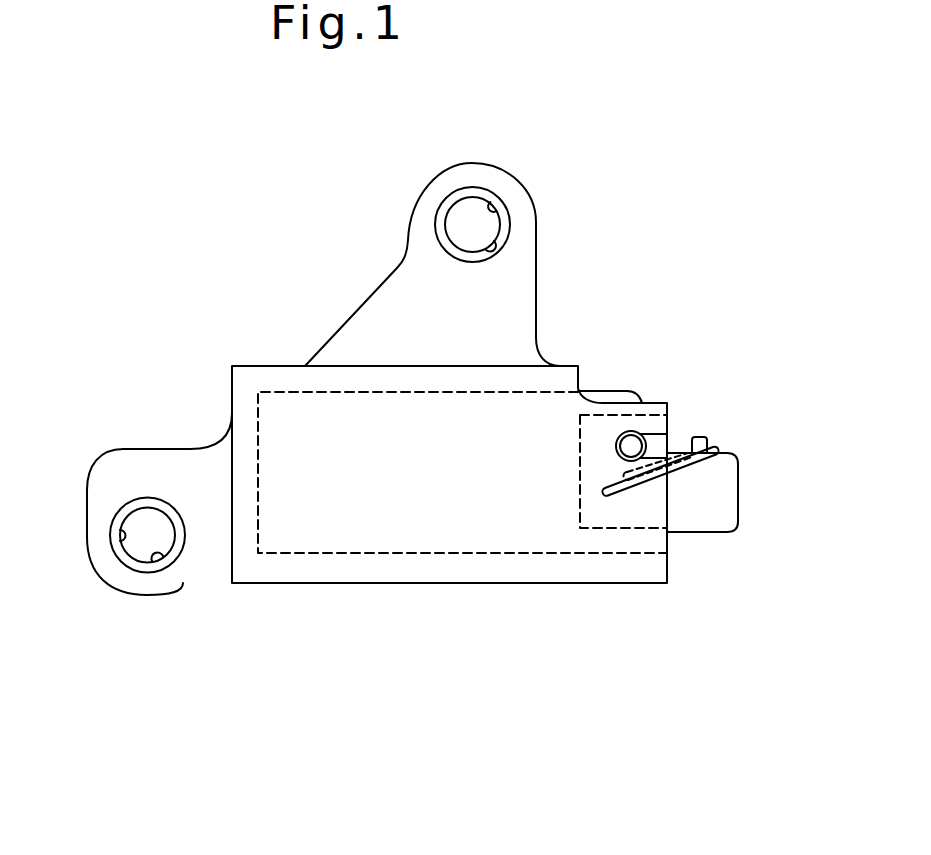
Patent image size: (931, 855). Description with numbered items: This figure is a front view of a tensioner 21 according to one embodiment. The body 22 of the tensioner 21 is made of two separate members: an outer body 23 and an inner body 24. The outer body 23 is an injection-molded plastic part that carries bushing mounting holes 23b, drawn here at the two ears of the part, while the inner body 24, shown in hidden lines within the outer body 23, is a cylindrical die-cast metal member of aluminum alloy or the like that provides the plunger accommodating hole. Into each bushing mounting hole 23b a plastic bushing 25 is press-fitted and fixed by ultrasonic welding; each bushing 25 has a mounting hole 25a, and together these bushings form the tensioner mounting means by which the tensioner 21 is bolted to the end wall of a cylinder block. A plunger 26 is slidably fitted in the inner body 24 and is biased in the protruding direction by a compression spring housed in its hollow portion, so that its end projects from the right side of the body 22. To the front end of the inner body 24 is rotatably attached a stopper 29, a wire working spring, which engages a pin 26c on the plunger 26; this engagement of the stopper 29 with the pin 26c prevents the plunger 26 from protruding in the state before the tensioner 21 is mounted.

The tensioner 21 is at (398, 203).
The body 22 is at (327, 282).
The outer body 23 is at (343, 320).
The inner body 24 is at (287, 392).
The bushing mounting hole 23b is at (500, 207).
The bushing 25 is at (505, 226).
The mounting hole 25a is at (495, 243).
The plunger 26 is at (737, 506).
The pin 26c is at (705, 437).
The stopper 29 is at (667, 463).